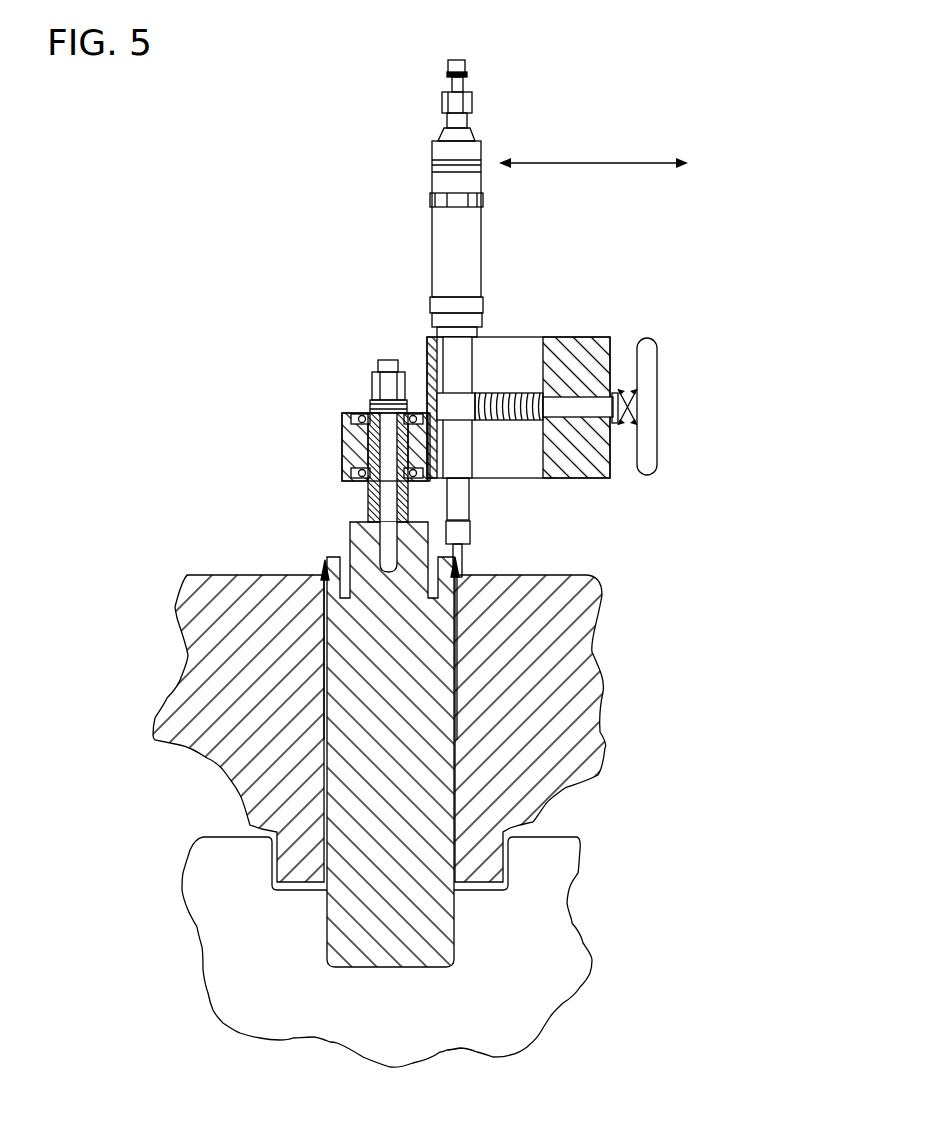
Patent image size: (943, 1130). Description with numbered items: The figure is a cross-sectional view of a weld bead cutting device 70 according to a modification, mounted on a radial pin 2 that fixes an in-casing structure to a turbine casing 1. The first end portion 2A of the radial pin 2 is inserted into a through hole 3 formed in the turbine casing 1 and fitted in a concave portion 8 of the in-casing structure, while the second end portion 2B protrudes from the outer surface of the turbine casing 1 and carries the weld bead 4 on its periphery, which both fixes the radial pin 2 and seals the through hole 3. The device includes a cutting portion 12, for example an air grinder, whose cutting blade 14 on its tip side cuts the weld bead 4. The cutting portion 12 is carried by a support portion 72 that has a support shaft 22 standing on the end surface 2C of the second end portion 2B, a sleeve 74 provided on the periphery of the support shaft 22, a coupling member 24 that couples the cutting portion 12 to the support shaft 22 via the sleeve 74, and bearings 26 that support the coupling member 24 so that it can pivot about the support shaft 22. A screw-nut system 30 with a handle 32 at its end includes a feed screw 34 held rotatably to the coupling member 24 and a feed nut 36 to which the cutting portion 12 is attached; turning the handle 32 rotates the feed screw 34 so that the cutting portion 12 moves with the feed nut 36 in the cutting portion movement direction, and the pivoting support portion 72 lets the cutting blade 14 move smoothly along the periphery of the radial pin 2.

The turbine casing 1 is at (205, 575).
The radial pin 2 is at (447, 800).
The first end portion 2A is at (368, 937).
The second end portion 2B is at (353, 541).
The end surface 2C is at (362, 516).
The through hole 3 is at (453, 805).
The weld bead 4 is at (321, 574).
The concave portion 8 is at (440, 950).
The cutting portion 12 is at (483, 239).
The cutting blade 14 is at (463, 559).
The support shaft 22 is at (347, 416).
The coupling member 24 is at (576, 337).
The bearings 26 is at (361, 415).
The screw-nut system 30 is at (619, 368).
The handle 32 is at (655, 341).
The feed screw 34 is at (520, 396).
The feed nut 36 is at (458, 400).
The weld bead cutting device 70 is at (516, 315).
The support portion 72 is at (350, 397).
The sleeve 74 is at (410, 503).